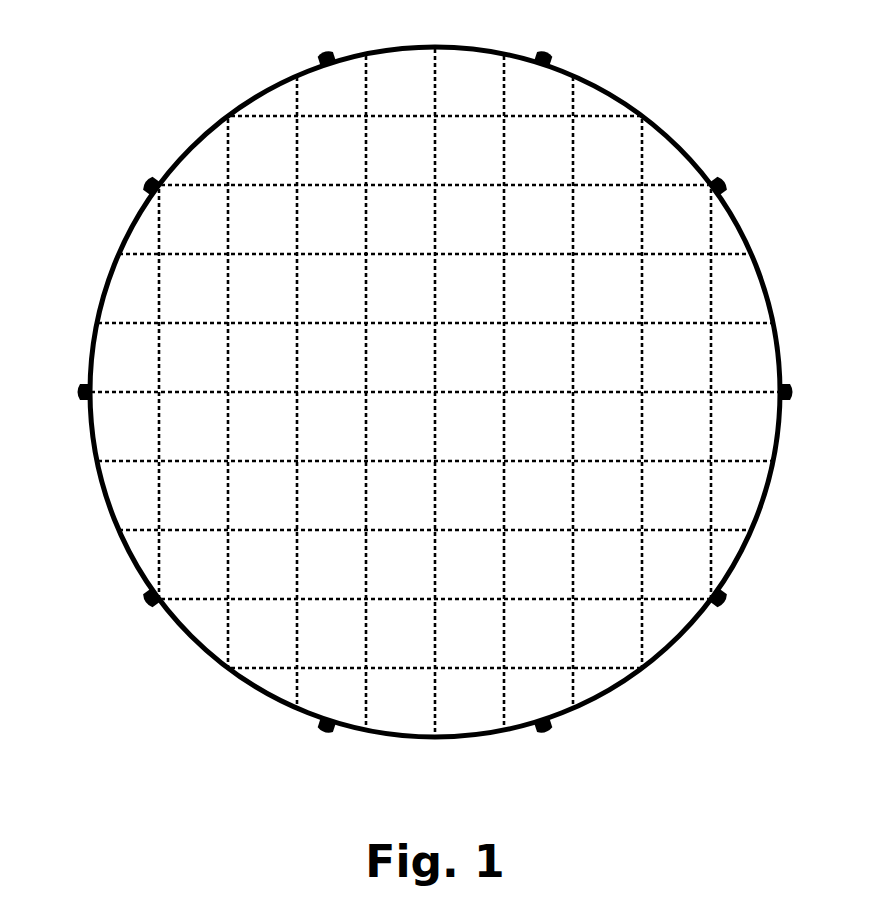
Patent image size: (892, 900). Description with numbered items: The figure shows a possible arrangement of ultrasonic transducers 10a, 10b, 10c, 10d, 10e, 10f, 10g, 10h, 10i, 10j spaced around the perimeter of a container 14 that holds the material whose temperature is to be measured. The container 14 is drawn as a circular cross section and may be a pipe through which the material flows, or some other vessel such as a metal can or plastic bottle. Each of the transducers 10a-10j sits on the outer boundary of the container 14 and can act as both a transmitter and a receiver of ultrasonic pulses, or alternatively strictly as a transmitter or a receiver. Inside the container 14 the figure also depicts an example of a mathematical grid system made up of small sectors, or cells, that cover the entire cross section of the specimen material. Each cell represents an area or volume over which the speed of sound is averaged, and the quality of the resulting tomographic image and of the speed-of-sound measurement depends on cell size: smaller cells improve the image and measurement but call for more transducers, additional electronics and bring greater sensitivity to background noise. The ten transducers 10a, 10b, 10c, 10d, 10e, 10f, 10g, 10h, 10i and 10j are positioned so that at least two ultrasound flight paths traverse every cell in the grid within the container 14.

The container 14 is at (680, 147).
The ultrasonic transducer 10a is at (130, 612).
The ultrasonic transducer 10b is at (58, 392).
The ultrasonic transducer 10c is at (129, 172).
The ultrasonic transducer 10d is at (320, 42).
The ultrasonic transducer 10e is at (550, 42).
The ultrasonic transducer 10f is at (739, 172).
The ultrasonic transducer 10g is at (812, 392).
The ultrasonic transducer 10h is at (741, 612).
The ultrasonic transducer 10i is at (552, 749).
The ultrasonic transducer 10j is at (317, 749).